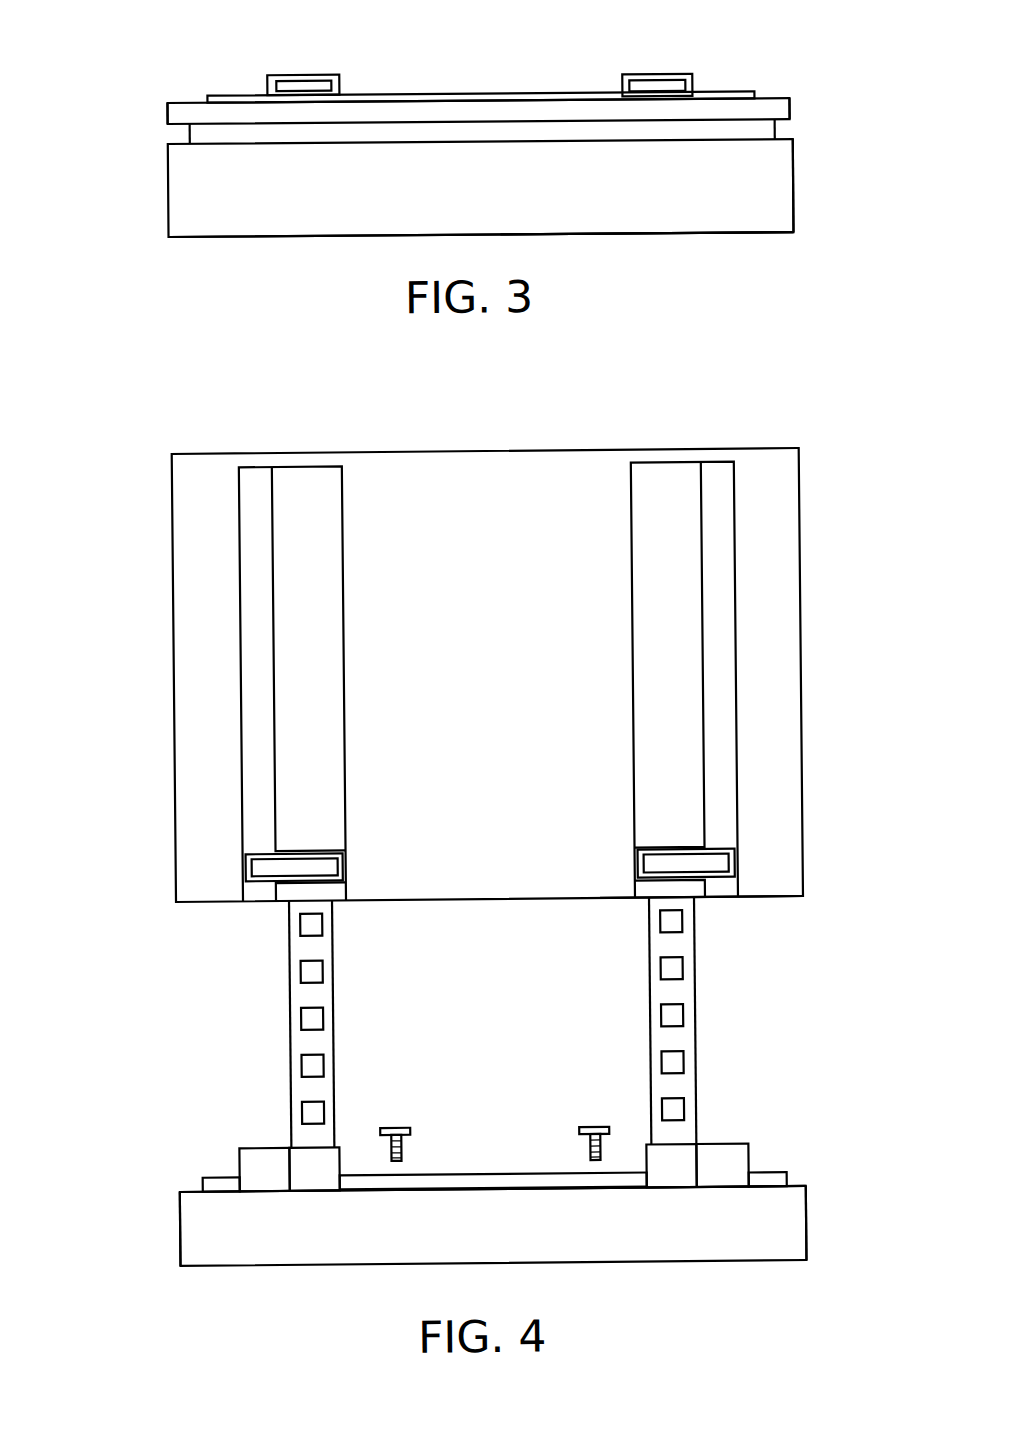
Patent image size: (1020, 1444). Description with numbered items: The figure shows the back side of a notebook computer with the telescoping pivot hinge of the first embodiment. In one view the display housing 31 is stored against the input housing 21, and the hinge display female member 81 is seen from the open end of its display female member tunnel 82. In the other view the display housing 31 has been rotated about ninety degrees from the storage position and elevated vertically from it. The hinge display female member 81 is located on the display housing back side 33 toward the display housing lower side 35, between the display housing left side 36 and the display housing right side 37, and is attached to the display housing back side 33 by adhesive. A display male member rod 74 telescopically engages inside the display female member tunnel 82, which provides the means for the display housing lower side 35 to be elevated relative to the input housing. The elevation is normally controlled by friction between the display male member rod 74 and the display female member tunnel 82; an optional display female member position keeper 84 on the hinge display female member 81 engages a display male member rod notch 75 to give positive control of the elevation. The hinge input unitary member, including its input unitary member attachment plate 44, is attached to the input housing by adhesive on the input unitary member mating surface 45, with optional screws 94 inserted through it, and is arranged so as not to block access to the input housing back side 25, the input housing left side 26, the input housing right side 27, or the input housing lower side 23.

In FIG. 3, the input housing 21 is at (165, 187).
In FIG. 3, the input housing lower side 23 is at (235, 238).
In FIG. 3, the input housing back side 25 is at (675, 219).
In FIG. 4, the input housing back side 25 is at (209, 1208).
In FIG. 4, the input housing left side 26 is at (803, 1232).
In FIG. 3, the input housing right side 27 is at (796, 215).
In FIG. 4, the input housing right side 27 is at (169, 1231).
In FIG. 3, the display housing 31 is at (438, 87).
In FIG. 3, the display housing back side 33 is at (570, 103).
In FIG. 4, the display housing back side 33 is at (218, 650).
In FIG. 3, the display housing lower side 35 is at (187, 110).
In FIG. 4, the display housing lower side 35 is at (752, 903).
In FIG. 3, the display housing left side 36 is at (793, 117).
In FIG. 3, the display housing right side 37 is at (165, 116).
In FIG. 3, the input unitary member attachment plate 44 is at (743, 133).
In FIG. 4, the input unitary member attachment plate 44 is at (479, 1180).
In FIG. 4, the input unitary member mating surface 45 is at (425, 1194).
In FIG. 4, the display male member rod 74 is at (682, 997).
In FIG. 4, the display male member rod notch 75 is at (304, 1019).
In FIG. 3, the hinge display female member 81 is at (693, 84).
In FIG. 4, the hinge display female member 81 is at (225, 560).
In FIG. 3, the display female member tunnel 82 is at (658, 90).
In FIG. 4, the display female member tunnel 82 is at (301, 769).
In FIG. 4, the display female member position keeper 84 is at (261, 866).
In FIG. 4, the screw 94 is at (391, 1129).